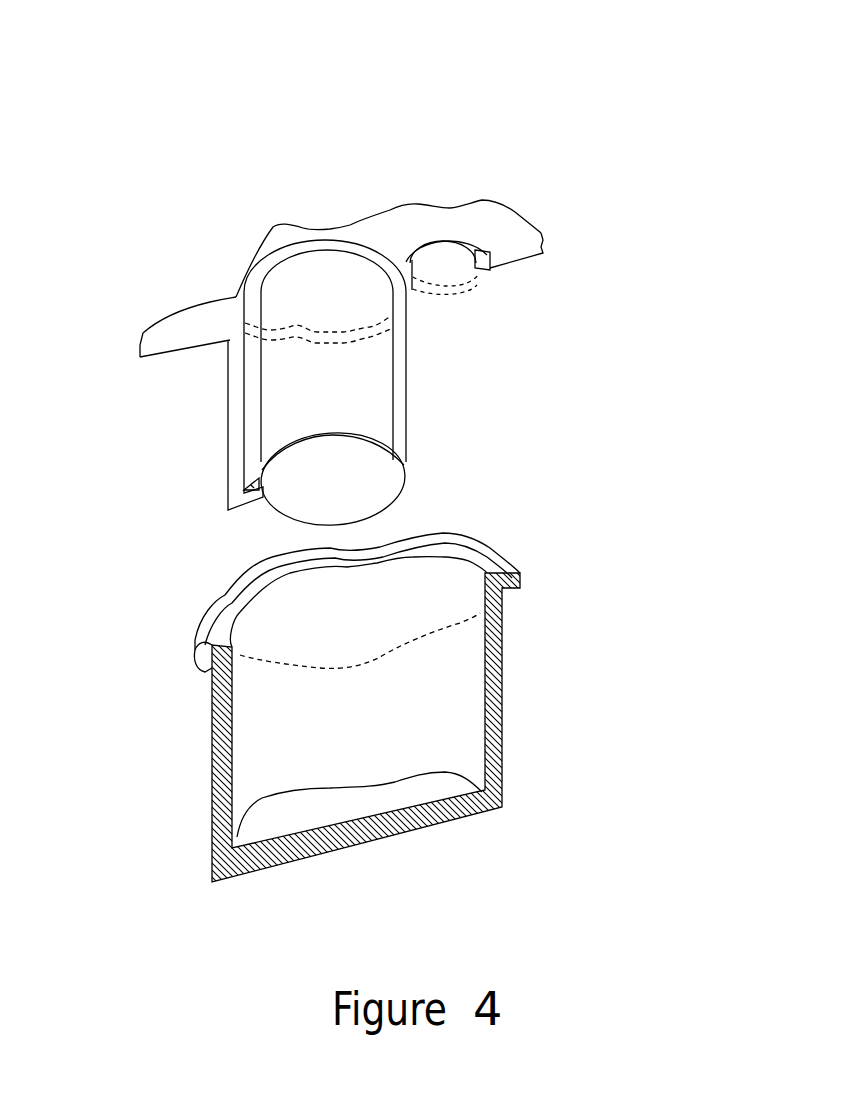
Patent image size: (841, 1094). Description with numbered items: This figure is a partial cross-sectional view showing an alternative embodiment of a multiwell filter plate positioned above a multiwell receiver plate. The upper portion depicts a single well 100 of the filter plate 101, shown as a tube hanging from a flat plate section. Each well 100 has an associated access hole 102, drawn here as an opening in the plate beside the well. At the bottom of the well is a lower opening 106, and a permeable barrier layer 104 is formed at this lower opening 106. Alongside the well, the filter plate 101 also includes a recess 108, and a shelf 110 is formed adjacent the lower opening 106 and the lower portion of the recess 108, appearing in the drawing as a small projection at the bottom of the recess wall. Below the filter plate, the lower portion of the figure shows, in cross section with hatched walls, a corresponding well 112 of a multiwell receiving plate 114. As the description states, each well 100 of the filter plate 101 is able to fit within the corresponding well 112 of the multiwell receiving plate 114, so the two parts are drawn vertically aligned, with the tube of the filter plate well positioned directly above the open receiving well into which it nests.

The well 100 is at (325, 290).
The filter plate 101 is at (288, 127).
The access hole 102 is at (440, 262).
The permeable barrier layer 104 is at (330, 450).
The lower opening 106 is at (405, 467).
The recess 108 is at (243, 293).
The shelf 110 is at (253, 482).
The well 112 is at (357, 728).
The multiwell receiving plate 114 is at (550, 701).